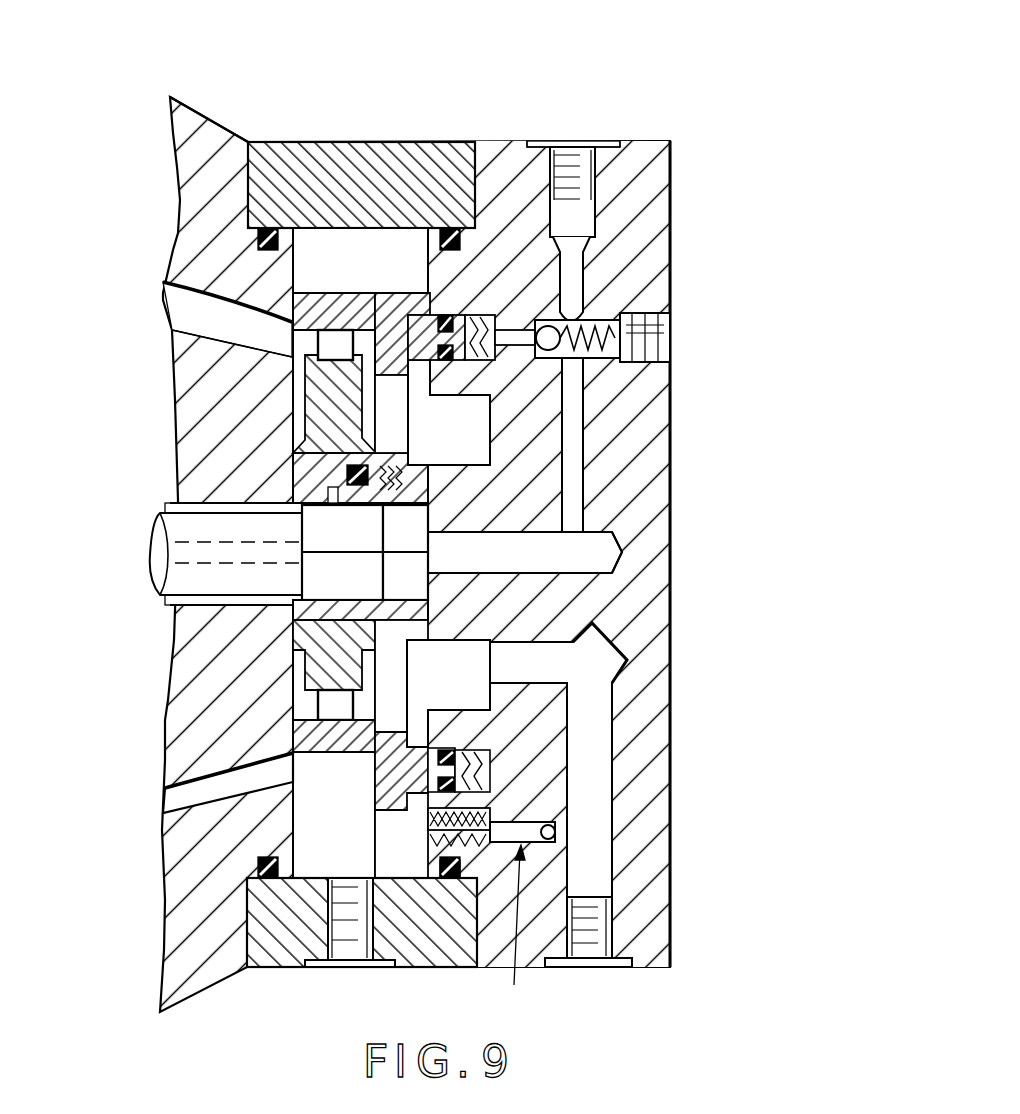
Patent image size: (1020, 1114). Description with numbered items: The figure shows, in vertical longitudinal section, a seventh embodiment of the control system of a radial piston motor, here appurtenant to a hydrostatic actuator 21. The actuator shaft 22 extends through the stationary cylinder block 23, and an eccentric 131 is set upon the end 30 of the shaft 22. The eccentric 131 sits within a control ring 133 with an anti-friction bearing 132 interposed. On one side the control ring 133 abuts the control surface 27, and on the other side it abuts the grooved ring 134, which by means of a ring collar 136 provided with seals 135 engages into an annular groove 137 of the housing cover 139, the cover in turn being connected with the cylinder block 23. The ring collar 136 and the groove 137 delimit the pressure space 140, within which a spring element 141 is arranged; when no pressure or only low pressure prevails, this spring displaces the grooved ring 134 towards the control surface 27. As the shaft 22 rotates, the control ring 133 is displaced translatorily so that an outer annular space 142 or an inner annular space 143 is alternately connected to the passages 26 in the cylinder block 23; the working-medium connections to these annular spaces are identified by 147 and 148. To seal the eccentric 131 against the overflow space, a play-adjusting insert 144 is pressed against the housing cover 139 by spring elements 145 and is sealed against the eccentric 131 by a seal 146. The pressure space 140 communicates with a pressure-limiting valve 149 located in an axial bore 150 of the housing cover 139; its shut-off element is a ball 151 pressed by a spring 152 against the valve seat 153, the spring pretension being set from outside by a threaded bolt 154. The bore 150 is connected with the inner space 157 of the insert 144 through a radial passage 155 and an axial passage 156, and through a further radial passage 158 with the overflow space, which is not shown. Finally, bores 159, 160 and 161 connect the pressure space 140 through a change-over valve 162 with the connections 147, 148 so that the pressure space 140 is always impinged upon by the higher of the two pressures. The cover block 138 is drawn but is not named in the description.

The hydrostatic actuator 21 is at (183, 99).
The actuator shaft 22 is at (175, 578).
The cylinder block 23 is at (233, 150).
The passages 26 is at (185, 312).
The control surface 27 is at (293, 843).
The end of the machine shaft 30 is at (306, 584).
The eccentric 131 is at (330, 381).
The anti-friction bearing 132 is at (330, 703).
The control ring 133 is at (292, 332).
The grooved ring 134 is at (392, 313).
The seals 135 is at (400, 830).
The ring collar 136 is at (402, 334).
The annular groove 137 is at (468, 385).
The top cover block 138 is at (365, 150).
The housing cover 139 is at (660, 805).
The pressure space 140 is at (410, 315).
The spring element 141 is at (482, 745).
The outer annular space 142 is at (364, 266).
The inner annular space 143 is at (300, 417).
The play-adjusting insert 144 is at (365, 612).
The spring elements 145 is at (400, 468).
The seal 146 is at (350, 488).
The working-medium connection 147 is at (357, 950).
The working-medium connection 148 is at (598, 935).
The pressure-limiting valve 149 is at (605, 360).
The axial bore 150 is at (528, 321).
The ball 151 is at (560, 327).
The spring 152 is at (578, 362).
The valve seat 153 is at (528, 322).
The threaded bolt 154 is at (657, 337).
The radial passage 155 is at (575, 537).
The axial passage 156 is at (595, 558).
The inner space of the insert 157 is at (394, 586).
The further radial passage 158 is at (573, 267).
The bore 159 is at (575, 782).
The bore 160 is at (560, 832).
The bore 161 is at (427, 795).
The change-over valve 162 is at (521, 927).